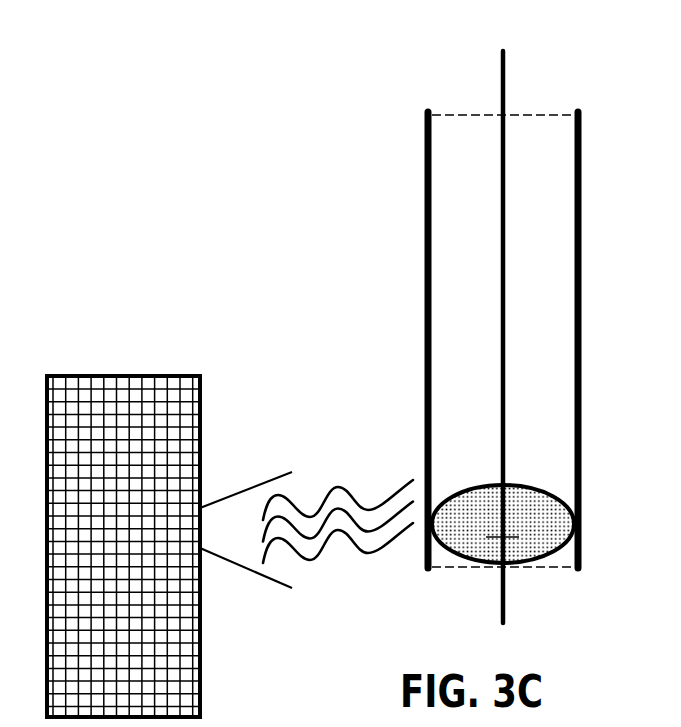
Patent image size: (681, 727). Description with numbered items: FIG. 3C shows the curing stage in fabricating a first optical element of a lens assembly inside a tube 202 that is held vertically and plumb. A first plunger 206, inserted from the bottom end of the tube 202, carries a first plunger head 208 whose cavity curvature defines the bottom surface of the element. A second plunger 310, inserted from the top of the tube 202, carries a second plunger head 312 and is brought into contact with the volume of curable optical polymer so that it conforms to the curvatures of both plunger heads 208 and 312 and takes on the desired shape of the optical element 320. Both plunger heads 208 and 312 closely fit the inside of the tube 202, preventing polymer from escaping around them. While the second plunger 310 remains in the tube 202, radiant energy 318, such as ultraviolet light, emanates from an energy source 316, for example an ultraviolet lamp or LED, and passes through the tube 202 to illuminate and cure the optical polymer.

The tube 202 is at (582, 167).
The first plunger 206 is at (503, 577).
The first plunger head 208 is at (452, 563).
The second plunger 310 is at (505, 92).
The second plunger head 312 is at (550, 492).
The energy source 316 is at (200, 422).
The radiant energy 318 is at (339, 588).
The optical element 320 is at (503, 524).